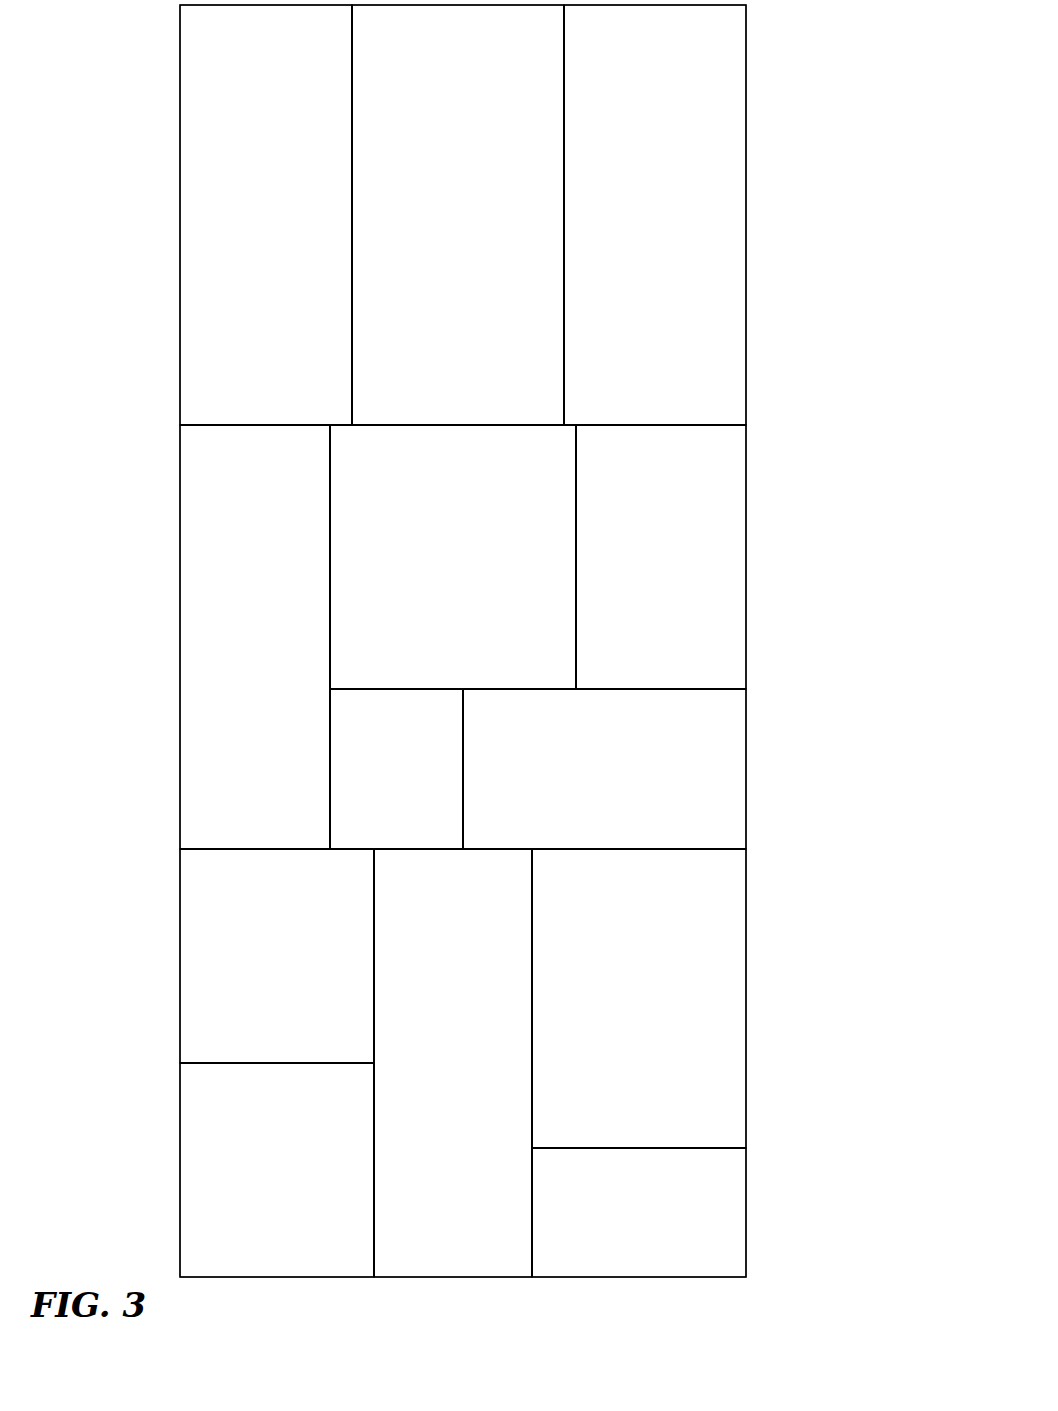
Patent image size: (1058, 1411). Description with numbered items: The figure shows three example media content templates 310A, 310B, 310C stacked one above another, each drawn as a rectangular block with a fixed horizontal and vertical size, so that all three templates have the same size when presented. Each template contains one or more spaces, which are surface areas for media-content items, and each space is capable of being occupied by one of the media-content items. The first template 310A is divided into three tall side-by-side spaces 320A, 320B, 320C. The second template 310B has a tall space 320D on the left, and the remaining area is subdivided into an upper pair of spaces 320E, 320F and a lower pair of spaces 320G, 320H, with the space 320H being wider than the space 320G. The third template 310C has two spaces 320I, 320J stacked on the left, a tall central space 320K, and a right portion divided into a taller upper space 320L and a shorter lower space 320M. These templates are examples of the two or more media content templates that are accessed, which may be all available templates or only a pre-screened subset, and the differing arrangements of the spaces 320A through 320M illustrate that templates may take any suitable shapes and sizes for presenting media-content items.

The media content template 310A is at (167, 4).
The media content template 310B is at (756, 433).
The media content template 310C is at (176, 853).
The space 320A is at (266, 215).
The space 320B is at (458, 215).
The space 320C is at (655, 215).
The space 320D is at (255, 637).
The space 320E is at (453, 557).
The space 320F is at (661, 557).
The space 320G is at (396, 769).
The space 320H is at (604, 769).
The space 320I is at (277, 1063).
The space 320J is at (277, 1170).
The space 320K is at (453, 1063).
The space 320L is at (639, 998).
The space 320M is at (639, 1212).